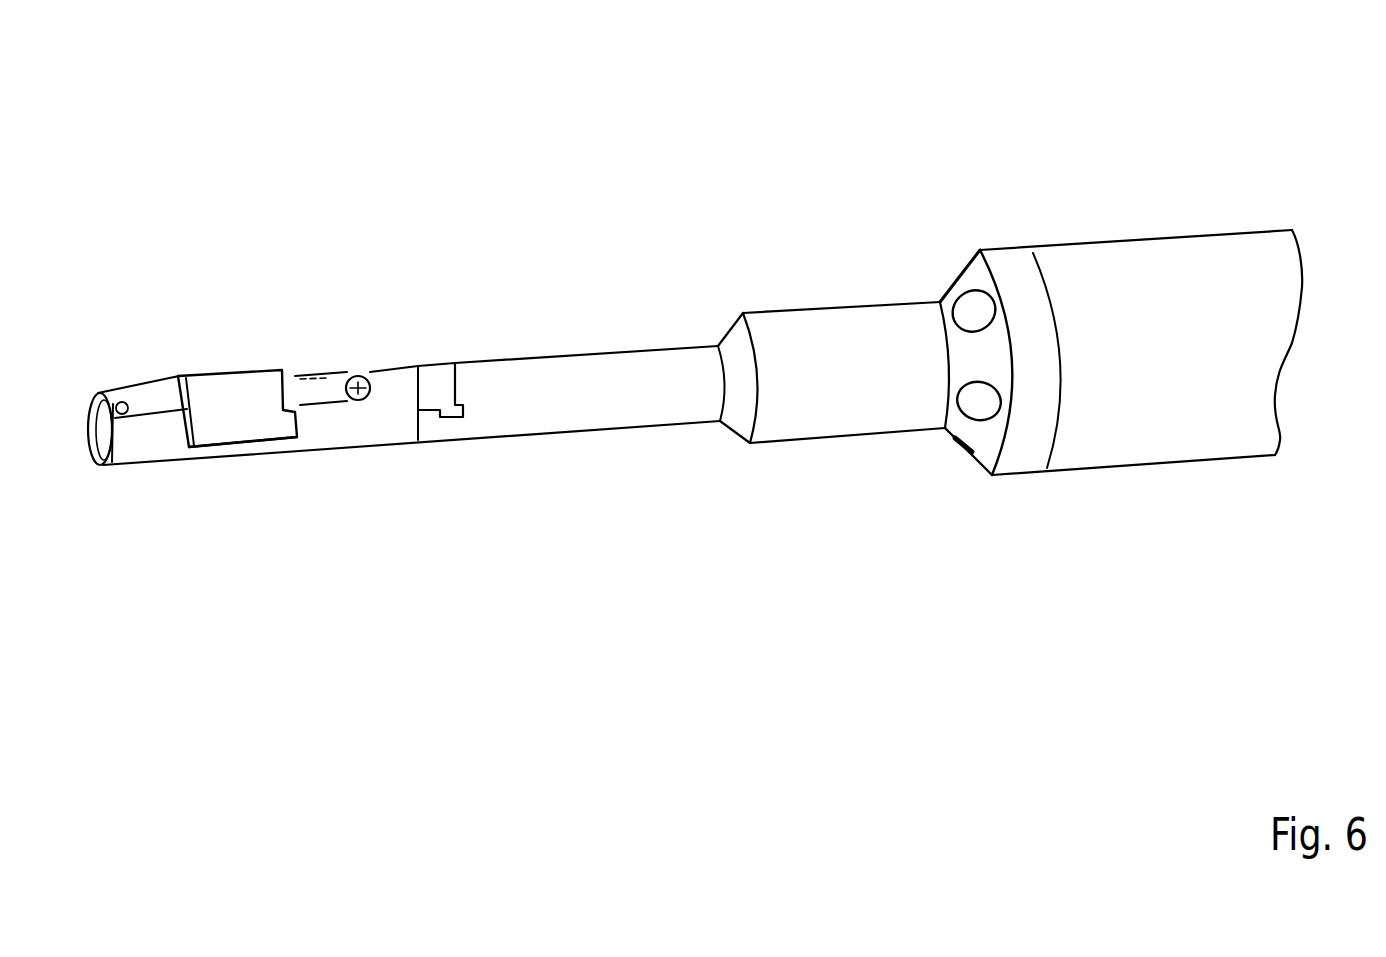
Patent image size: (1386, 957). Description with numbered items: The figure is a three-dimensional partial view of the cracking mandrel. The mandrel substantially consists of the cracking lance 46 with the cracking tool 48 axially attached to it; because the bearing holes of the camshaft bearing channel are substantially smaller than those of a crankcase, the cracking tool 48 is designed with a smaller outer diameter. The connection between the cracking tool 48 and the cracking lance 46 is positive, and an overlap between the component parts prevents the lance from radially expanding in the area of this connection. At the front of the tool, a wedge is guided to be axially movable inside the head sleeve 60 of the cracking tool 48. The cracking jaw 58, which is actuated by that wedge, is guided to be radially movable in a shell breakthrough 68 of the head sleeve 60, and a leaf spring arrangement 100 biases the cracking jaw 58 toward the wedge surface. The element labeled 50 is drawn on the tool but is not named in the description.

The leaf spring arrangement 100 is at (143, 412).
The shell breakthrough 68 is at (272, 412).
The head sleeve 60 is at (398, 377).
The stop bracket 50 is at (437, 380).
The cracking lance 46 is at (667, 375).
The cracking jaw 58 is at (228, 407).
The cracking tool 48 is at (375, 428).